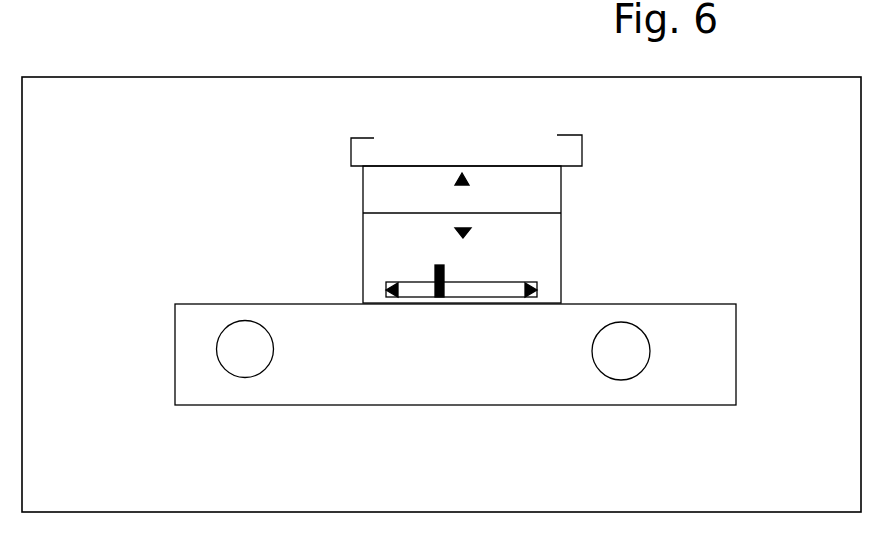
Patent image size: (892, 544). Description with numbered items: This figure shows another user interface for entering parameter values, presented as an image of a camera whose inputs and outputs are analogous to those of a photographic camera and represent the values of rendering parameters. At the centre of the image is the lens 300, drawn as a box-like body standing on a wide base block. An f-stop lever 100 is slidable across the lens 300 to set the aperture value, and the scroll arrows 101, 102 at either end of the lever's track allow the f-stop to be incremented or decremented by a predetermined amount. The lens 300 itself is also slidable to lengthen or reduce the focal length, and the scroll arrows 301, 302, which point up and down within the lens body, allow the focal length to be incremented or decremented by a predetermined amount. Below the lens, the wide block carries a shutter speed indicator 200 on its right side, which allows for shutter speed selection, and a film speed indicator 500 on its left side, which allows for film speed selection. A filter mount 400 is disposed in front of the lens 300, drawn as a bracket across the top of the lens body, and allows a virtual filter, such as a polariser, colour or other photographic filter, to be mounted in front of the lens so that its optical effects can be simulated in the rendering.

The f-stop lever 100 is at (432, 272).
The scroll arrow 101 is at (392, 287).
The scroll arrow 102 is at (537, 290).
The shutter speed indicator 200 is at (625, 365).
The lens 300 is at (538, 192).
The scroll arrow 301 is at (462, 173).
The scroll arrow 302 is at (471, 230).
The filter mount 400 is at (342, 145).
The film speed indicator 500 is at (262, 365).